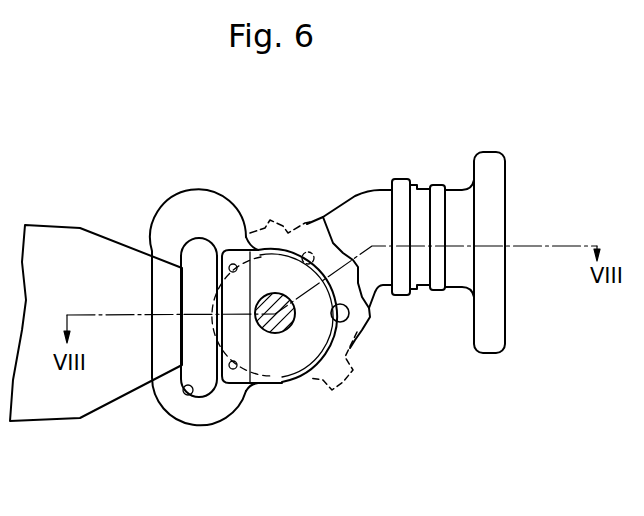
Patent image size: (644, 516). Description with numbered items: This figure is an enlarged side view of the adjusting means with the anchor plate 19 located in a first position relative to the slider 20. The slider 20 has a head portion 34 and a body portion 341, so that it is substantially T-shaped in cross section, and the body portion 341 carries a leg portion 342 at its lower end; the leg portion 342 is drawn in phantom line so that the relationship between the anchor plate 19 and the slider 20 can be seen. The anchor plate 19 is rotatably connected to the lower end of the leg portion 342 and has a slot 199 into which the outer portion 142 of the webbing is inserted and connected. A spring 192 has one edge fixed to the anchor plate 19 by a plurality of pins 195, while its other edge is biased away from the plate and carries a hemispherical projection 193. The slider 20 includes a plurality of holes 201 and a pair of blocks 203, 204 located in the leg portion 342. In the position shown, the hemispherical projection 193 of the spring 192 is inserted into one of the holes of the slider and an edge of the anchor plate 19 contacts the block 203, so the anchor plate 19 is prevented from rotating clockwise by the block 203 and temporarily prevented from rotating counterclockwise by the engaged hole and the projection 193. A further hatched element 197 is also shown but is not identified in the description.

The anchor plate 19 is at (187, 222).
The slider 20 is at (378, 184).
The head portion 34 is at (502, 314).
The outer portion 142 is at (75, 398).
The spring 192 is at (300, 367).
The hemispherical projection 193 is at (347, 320).
The pins 195 is at (233, 257).
The shaft 197 is at (282, 334).
The slot 199 is at (190, 397).
The holes 201 is at (306, 252).
The block 203 is at (268, 225).
The block 204 is at (345, 382).
The body portion 341 is at (457, 198).
The leg portion 342 is at (370, 288).